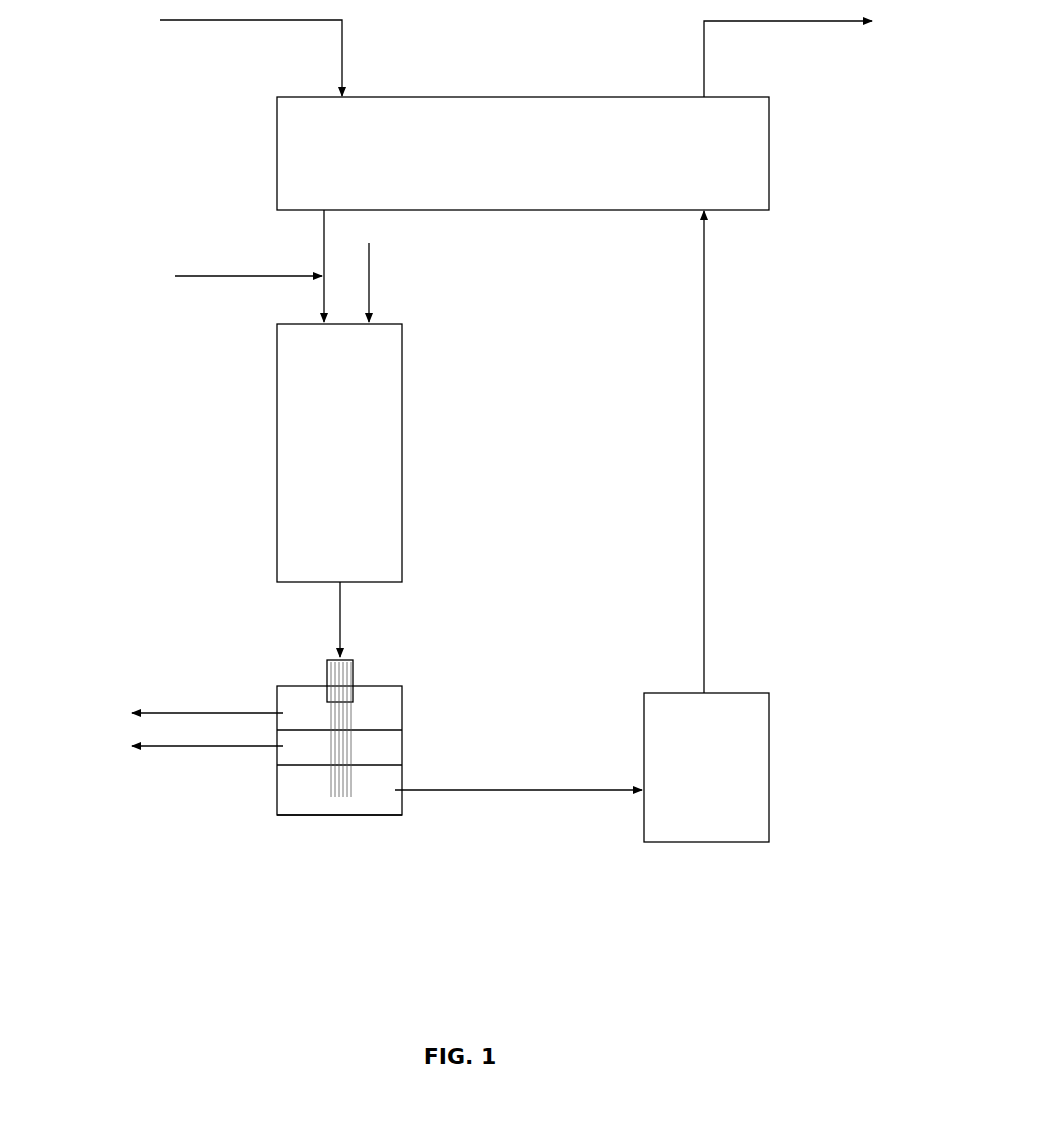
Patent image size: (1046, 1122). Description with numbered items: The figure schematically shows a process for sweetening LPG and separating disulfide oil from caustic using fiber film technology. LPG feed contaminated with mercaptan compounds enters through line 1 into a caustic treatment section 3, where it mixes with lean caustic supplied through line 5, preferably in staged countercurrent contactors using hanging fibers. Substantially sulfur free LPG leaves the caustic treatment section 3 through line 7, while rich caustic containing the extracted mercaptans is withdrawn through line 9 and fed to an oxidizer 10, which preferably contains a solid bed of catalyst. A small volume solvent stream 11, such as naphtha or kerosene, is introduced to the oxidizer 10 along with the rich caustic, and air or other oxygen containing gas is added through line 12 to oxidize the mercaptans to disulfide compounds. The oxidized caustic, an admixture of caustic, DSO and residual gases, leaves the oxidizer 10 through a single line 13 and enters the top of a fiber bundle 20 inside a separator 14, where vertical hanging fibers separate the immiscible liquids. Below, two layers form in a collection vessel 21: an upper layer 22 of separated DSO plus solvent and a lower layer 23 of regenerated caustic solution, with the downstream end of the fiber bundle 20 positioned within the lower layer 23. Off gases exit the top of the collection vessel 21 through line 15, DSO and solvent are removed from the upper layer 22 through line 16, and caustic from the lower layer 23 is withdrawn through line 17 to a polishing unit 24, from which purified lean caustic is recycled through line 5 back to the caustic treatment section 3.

The line 1 is at (192, 21).
The caustic treatment section 3 is at (523, 153).
The line 5 is at (705, 258).
The line 7 is at (842, 22).
The line 9 is at (323, 249).
The oxidizer 10 is at (339, 453).
The solvent stream 11 is at (197, 277).
The line 12 is at (370, 270).
The line 13 is at (338, 612).
The separator 14 is at (387, 711).
The line 15 is at (196, 712).
The line 16 is at (196, 747).
The line 17 is at (510, 792).
The fiber bundle 20 is at (340, 675).
The collection vessel 21 is at (300, 817).
The upper layer 22 is at (297, 757).
The lower layer 23 is at (385, 805).
The polishing unit 24 is at (706, 767).